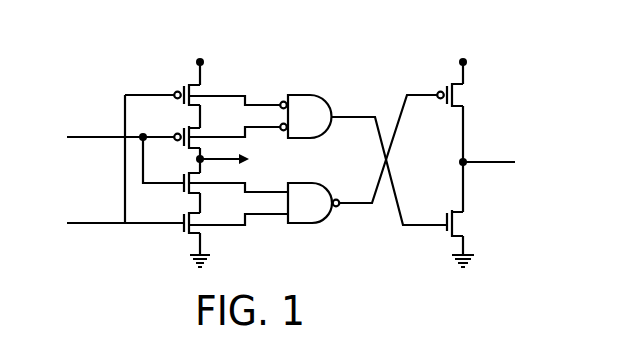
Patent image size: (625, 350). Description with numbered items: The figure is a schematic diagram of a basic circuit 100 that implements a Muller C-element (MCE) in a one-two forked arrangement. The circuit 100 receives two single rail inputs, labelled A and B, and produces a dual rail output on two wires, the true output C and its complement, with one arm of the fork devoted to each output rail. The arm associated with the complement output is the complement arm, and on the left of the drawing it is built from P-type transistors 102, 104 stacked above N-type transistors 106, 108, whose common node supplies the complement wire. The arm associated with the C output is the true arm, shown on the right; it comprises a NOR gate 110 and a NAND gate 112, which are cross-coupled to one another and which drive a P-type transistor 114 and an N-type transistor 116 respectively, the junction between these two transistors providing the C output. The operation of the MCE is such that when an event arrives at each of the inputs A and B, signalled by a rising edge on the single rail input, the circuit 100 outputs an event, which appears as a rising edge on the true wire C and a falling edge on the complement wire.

The circuit 100 is at (347, 44).
The P-type transistor 102 is at (174, 92).
The P-type transistor 104 is at (175, 133).
The N-type transistor 106 is at (184, 174).
The N-type transistor 108 is at (181, 226).
The NOR gate 110 is at (297, 95).
The NAND gate 112 is at (312, 183).
The P-type transistor 114 is at (437, 94).
The N-type transistor 116 is at (443, 222).